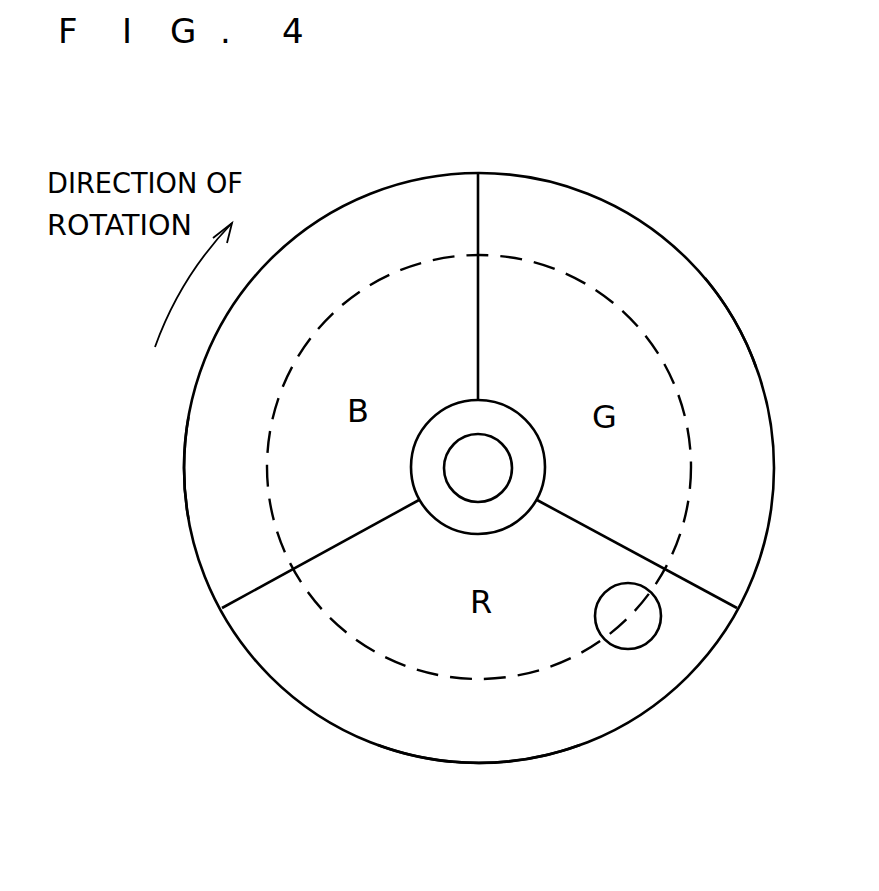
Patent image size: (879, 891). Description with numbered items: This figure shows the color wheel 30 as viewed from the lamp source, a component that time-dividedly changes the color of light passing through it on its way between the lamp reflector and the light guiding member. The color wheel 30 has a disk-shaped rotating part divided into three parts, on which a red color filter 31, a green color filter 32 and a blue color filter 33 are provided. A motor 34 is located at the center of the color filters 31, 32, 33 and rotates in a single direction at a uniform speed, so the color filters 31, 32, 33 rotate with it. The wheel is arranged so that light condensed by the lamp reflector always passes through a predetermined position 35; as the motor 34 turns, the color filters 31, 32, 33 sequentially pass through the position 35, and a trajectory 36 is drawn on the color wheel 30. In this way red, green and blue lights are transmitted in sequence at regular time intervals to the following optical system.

The color wheel 30 is at (735, 185).
The color filter for red 31 is at (520, 763).
The color filter for green 32 is at (743, 348).
The color filter for blue 33 is at (182, 460).
The motor 34 is at (500, 418).
The predetermined position 35 is at (647, 645).
The trajectory 36 is at (400, 665).